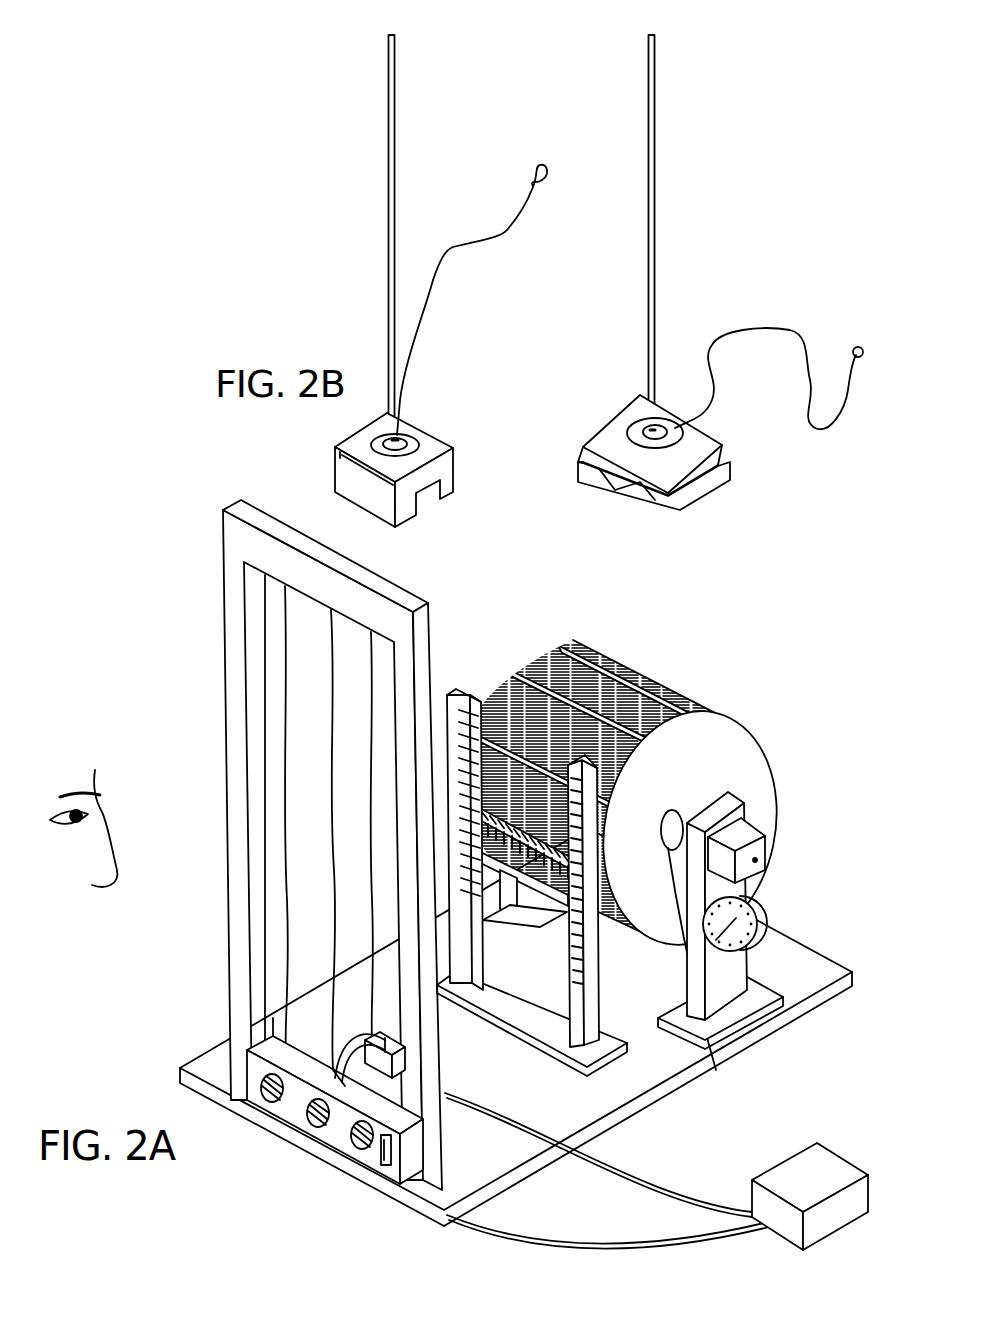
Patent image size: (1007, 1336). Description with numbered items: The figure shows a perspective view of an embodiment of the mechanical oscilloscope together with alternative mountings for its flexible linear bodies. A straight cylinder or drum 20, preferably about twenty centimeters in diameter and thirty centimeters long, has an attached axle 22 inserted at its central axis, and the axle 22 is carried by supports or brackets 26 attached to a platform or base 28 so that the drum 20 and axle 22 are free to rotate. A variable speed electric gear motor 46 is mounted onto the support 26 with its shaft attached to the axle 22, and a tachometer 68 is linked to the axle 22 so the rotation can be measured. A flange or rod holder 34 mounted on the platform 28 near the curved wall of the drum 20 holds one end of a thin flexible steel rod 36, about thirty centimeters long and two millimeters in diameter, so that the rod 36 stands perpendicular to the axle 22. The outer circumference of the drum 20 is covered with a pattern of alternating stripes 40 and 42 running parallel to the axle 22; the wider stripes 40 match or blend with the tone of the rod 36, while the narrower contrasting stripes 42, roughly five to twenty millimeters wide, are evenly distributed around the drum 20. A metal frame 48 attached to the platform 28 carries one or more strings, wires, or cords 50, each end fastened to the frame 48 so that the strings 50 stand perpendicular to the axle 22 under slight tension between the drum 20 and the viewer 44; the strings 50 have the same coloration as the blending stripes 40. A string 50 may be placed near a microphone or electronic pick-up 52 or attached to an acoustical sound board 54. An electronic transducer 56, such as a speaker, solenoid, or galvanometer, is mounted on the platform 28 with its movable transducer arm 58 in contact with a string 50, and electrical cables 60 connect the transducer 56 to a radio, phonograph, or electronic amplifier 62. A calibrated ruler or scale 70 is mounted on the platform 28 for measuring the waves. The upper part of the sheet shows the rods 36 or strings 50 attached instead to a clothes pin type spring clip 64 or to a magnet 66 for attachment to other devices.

In FIG. 2A, the drum 20 is at (748, 775).
In FIG. 2A, the axle 22 is at (716, 1070).
In FIG. 2A, the supports 26 is at (732, 982).
In FIG. 2A, the platform 28 is at (782, 970).
In FIG. 2B, the rod holder 34 is at (652, 438).
In FIG. 2B, the rod 36 is at (648, 105).
In FIG. 2A, the stripes 40 is at (528, 668).
In FIG. 2A, the contrasting stripes 42 is at (610, 797).
In FIG. 2A, the viewer 44 is at (72, 882).
In FIG. 2A, the motor 46 is at (757, 846).
In FIG. 2A, the frame 48 is at (232, 646).
In FIG. 2B, the strings 50 is at (510, 232).
In FIG. 2A, the strings 50 is at (372, 735).
In FIG. 2A, the electronic pick-up 52 is at (390, 1142).
In FIG. 2A, the acoustical sound board 54 is at (297, 1112).
In FIG. 2A, the electronic transducer 56 is at (393, 1068).
In FIG. 2A, the transducer arm 58 is at (365, 1037).
In FIG. 2A, the cables 60 is at (557, 1243).
In FIG. 2A, the electronic amplifier 62 is at (802, 1167).
In FIG. 2B, the spring clip 64 is at (700, 447).
In FIG. 2B, the magnet 66 is at (450, 466).
In FIG. 2A, the tachometer 68 is at (745, 924).
In FIG. 2A, the scale 70 is at (459, 735).